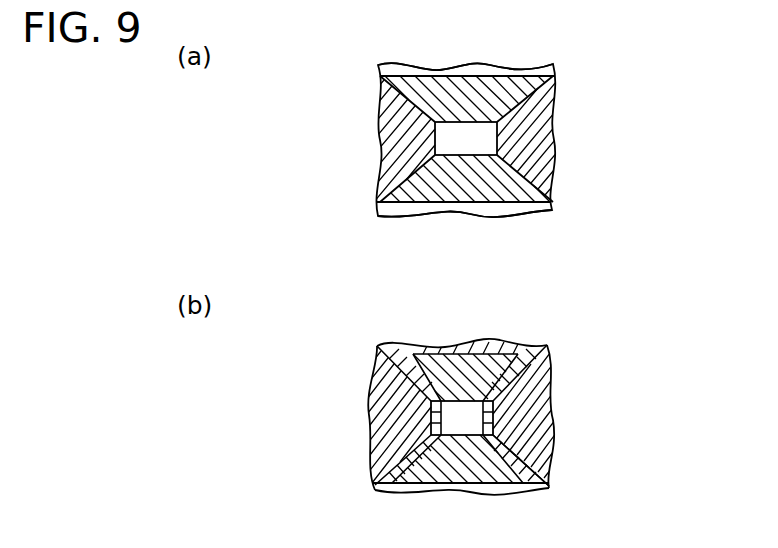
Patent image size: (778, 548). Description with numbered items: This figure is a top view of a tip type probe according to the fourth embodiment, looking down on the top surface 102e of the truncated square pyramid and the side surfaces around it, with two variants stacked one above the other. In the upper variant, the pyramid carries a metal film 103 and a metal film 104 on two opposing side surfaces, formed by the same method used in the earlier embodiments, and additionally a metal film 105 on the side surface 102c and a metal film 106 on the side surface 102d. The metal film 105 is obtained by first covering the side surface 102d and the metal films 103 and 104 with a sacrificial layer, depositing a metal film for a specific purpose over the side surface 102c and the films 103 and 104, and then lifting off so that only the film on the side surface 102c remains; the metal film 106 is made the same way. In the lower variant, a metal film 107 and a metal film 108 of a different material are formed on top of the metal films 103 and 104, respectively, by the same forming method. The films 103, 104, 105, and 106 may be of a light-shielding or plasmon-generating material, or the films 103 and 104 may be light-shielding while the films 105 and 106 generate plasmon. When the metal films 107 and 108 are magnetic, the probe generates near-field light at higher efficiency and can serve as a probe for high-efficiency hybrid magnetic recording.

The side surface 102c is at (465, 70).
The side surface 102d is at (432, 212).
The top surface 102e is at (487, 132).
The metal film 103 is at (395, 123).
The metal film 104 is at (535, 138).
The metal film 105 is at (438, 95).
The metal film 106 is at (492, 175).
The metal film 107 is at (400, 407).
The metal film 108 is at (530, 413).